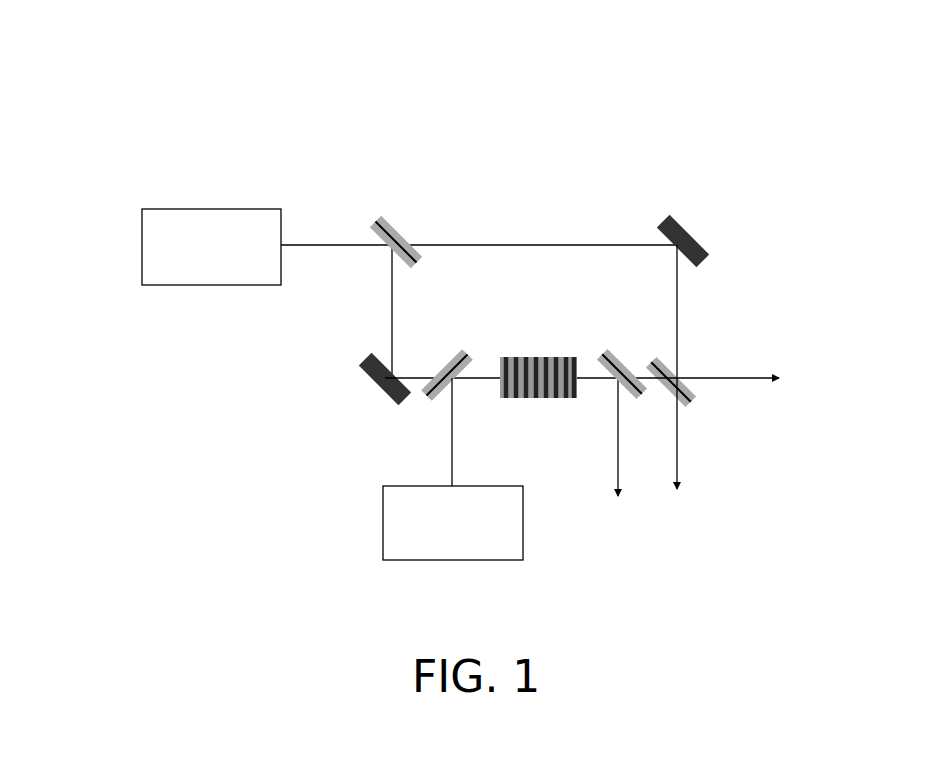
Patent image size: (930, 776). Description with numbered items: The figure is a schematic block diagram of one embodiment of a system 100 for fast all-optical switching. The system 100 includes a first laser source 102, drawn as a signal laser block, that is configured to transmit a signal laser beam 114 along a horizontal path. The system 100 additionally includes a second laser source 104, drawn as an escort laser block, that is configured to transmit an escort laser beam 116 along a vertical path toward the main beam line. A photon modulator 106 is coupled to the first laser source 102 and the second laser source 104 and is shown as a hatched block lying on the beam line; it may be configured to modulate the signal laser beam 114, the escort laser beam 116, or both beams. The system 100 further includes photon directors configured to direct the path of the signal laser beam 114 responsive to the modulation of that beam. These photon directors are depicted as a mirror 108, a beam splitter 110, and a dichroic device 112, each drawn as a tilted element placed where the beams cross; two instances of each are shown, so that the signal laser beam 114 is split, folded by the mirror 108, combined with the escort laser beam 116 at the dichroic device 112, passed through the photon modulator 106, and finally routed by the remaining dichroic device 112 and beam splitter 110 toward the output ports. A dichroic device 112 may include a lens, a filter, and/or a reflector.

The system for fast all-optical switching 100 is at (86, 74).
The first laser source 102 is at (142, 208).
The second laser source 104 is at (383, 486).
The photon modulator 106 is at (548, 357).
The mirror 108 is at (665, 215).
The beam splitter 110 is at (385, 222).
The dichroic device 112 is at (452, 384).
The signal laser beam 114 is at (313, 244).
The escort laser beam 116 is at (452, 432).